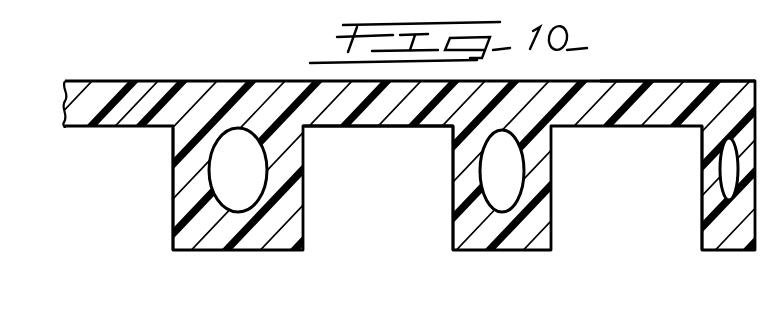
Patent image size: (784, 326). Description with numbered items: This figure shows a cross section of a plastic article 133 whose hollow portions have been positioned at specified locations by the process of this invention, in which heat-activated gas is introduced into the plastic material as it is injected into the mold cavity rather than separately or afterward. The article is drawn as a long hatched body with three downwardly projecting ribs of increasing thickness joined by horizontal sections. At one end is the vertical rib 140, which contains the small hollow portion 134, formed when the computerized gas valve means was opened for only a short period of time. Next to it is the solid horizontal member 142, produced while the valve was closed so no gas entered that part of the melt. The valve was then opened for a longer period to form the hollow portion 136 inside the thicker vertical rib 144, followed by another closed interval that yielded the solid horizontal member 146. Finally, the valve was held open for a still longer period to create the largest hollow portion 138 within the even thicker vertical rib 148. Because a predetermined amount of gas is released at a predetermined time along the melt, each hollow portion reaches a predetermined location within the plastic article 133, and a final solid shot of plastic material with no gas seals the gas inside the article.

The plastic article 133 is at (138, 81).
The hollow portion 134 is at (727, 168).
The hollow portion 136 is at (497, 170).
The hollow portion 138 is at (228, 171).
The vertical rib 140 is at (708, 142).
The solid horizontal member 142 is at (664, 81).
The thicker vertical rib 144 is at (463, 147).
The solid horizontal member 146 is at (343, 113).
The even thicker vertical rib 148 is at (180, 143).